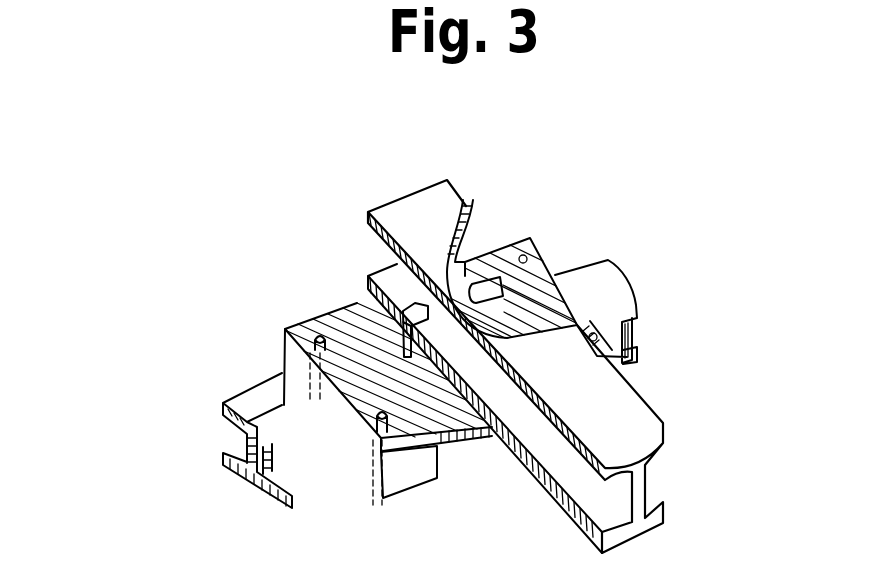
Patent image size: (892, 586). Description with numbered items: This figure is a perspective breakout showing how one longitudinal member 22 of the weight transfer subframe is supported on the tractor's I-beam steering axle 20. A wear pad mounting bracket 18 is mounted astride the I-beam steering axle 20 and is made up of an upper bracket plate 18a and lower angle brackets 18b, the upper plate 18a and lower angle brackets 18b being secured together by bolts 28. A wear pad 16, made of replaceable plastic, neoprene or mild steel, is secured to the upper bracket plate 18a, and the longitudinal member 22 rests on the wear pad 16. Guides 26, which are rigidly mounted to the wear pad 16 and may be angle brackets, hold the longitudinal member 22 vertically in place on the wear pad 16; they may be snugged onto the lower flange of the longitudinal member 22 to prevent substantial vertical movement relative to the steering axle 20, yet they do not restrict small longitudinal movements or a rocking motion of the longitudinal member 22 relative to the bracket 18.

The wear pad 16 is at (358, 296).
The wear pad mounting bracket 18 is at (318, 281).
The upper bracket plate 18a is at (320, 325).
The lower angle brackets 18b is at (285, 377).
The I-beam steering axle 20 is at (282, 408).
The longitudinal members 22 is at (585, 367).
The guides 26 is at (361, 293).
The bolts 28 is at (398, 432).